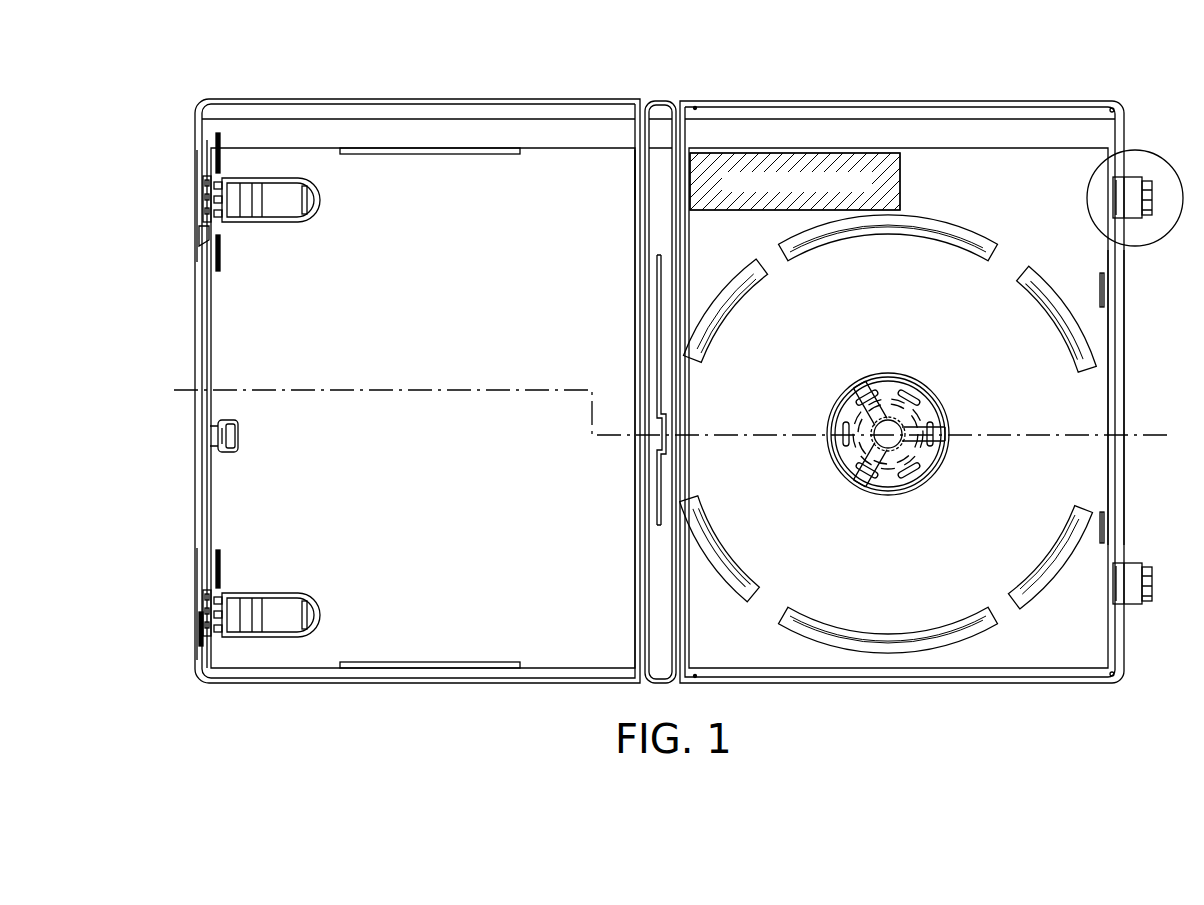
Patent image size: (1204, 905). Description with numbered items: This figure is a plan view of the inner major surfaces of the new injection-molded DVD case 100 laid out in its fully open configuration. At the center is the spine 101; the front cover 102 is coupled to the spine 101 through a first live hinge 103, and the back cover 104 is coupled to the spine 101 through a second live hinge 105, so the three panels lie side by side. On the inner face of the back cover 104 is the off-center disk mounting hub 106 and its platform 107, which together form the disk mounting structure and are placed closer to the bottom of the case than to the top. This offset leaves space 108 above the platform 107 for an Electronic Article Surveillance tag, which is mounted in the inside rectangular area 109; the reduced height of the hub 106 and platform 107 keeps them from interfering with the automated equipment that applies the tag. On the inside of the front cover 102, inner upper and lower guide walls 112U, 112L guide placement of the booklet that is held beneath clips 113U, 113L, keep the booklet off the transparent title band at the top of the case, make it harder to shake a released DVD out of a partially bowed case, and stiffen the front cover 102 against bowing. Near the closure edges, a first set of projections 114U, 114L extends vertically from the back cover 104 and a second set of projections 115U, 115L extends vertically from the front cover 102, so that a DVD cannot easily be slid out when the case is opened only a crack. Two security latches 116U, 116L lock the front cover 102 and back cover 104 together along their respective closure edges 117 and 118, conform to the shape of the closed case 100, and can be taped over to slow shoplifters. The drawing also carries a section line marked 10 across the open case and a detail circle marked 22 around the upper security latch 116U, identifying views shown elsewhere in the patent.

The DVD case 100 is at (363, 78).
The spine 101 is at (660, 150).
The front cover 102 is at (328, 162).
The first live hinge 103 is at (688, 142).
The back cover 104 is at (1070, 165).
The second live hinge 105 is at (638, 170).
The disk mounting hub 106 is at (955, 459).
The platform 107 is at (947, 226).
The space 108 is at (930, 185).
The inside rectangular area 109 is at (820, 160).
The inner upper guide wall 112U is at (446, 146).
The inner lower guide wall 112L is at (422, 670).
The clip 113U is at (279, 198).
The clip 113L is at (279, 616).
The projection 114U is at (1105, 290).
The projection 114L is at (1105, 524).
The projection 115U is at (204, 240).
The projection 115L is at (198, 642).
The security latch 116U is at (1135, 195).
The security latch 116L is at (1133, 592).
The closure edge 117 is at (190, 448).
The closure edge 118 is at (1124, 338).
The detail circle 22 is at (1142, 150).
The section line 10 is at (174, 390).